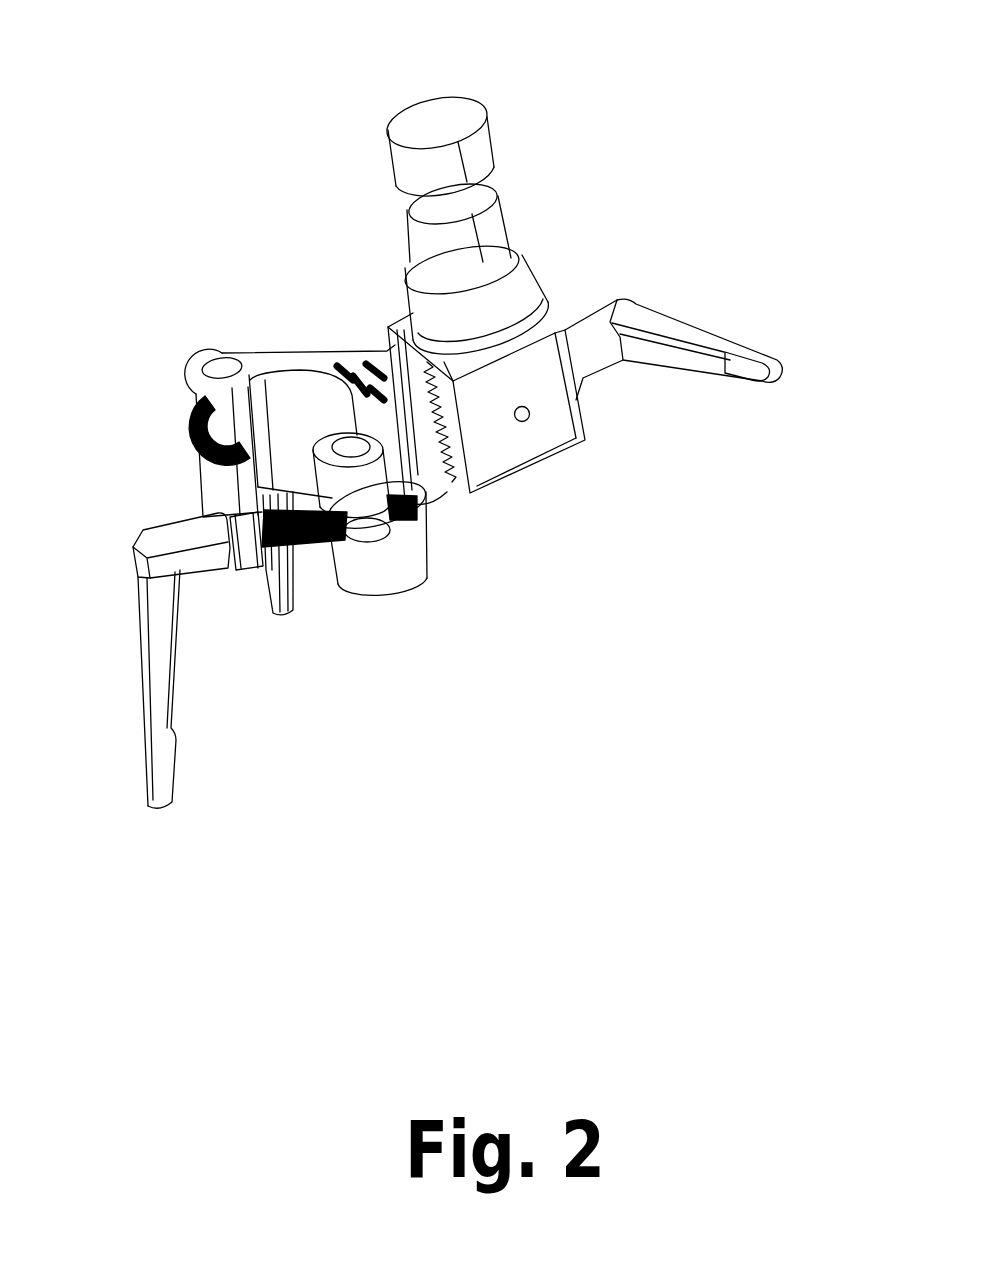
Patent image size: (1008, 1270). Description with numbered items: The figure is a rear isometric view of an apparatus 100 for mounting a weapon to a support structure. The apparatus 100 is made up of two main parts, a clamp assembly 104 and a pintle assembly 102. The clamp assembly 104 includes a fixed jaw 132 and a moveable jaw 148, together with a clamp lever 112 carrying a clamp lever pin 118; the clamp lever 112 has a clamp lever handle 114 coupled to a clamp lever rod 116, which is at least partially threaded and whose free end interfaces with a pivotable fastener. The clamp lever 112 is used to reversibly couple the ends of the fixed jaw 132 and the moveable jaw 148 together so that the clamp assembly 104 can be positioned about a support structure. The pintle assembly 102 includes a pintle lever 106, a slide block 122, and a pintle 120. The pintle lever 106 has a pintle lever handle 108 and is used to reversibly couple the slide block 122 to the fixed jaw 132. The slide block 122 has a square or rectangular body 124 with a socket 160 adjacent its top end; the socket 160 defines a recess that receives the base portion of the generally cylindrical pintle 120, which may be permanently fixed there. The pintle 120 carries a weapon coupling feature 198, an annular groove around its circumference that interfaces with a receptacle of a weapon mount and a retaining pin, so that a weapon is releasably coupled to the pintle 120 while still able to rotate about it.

The apparatus 100 is at (247, 64).
The pintle assembly 102 is at (540, 150).
The clamp assembly 104 is at (264, 313).
The pintle lever 106 is at (641, 314).
The pintle lever handle 108 is at (757, 350).
The clamp lever 112 is at (160, 537).
The clamp lever handle 114 is at (162, 785).
The clamp lever rod 116 is at (305, 545).
The clamp lever pin 118 is at (377, 523).
The pintle 120 is at (422, 118).
The slide block 122 is at (555, 333).
The body 124 is at (585, 438).
The fixed jaw 132 is at (307, 357).
The moveable jaw 148 is at (198, 428).
The socket 160 is at (530, 282).
The weapon coupling feature 198 is at (400, 200).